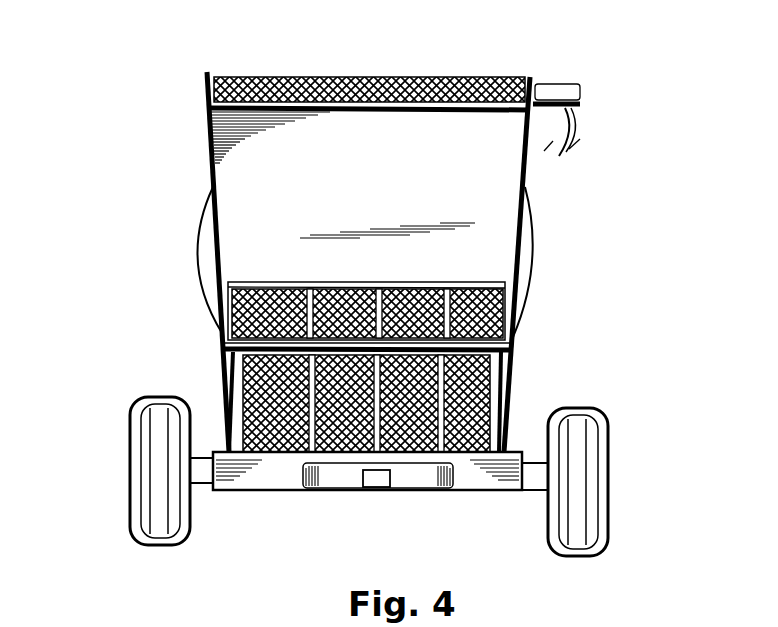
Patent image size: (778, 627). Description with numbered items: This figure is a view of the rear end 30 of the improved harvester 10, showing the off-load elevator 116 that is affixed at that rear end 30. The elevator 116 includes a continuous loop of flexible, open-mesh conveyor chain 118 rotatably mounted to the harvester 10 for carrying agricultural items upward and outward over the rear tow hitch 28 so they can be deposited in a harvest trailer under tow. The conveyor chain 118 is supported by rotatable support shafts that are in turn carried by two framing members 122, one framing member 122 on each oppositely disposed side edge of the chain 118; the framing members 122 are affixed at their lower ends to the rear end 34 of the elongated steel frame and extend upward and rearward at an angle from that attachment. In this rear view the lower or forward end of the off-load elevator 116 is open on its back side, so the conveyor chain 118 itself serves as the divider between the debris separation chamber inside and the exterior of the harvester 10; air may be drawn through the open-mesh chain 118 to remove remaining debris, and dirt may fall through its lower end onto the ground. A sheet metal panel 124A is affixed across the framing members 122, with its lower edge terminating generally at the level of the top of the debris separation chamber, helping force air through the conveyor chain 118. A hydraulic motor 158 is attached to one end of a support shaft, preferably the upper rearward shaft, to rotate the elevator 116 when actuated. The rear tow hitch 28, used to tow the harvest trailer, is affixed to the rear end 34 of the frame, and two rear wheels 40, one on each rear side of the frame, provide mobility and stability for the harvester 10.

The harvester 10 is at (183, 262).
The off-load elevator 116 is at (283, 77).
The conveyor chain 118 is at (226, 310).
The framing members 122 is at (208, 146).
The sheet metal panel 124A is at (460, 259).
The hydraulic motor 158 is at (562, 84).
The rear end of harvester 30 is at (527, 410).
The rear end of frame 34 is at (244, 478).
The rear tow hitch 28 is at (371, 490).
The rear wheels 40 is at (150, 398).